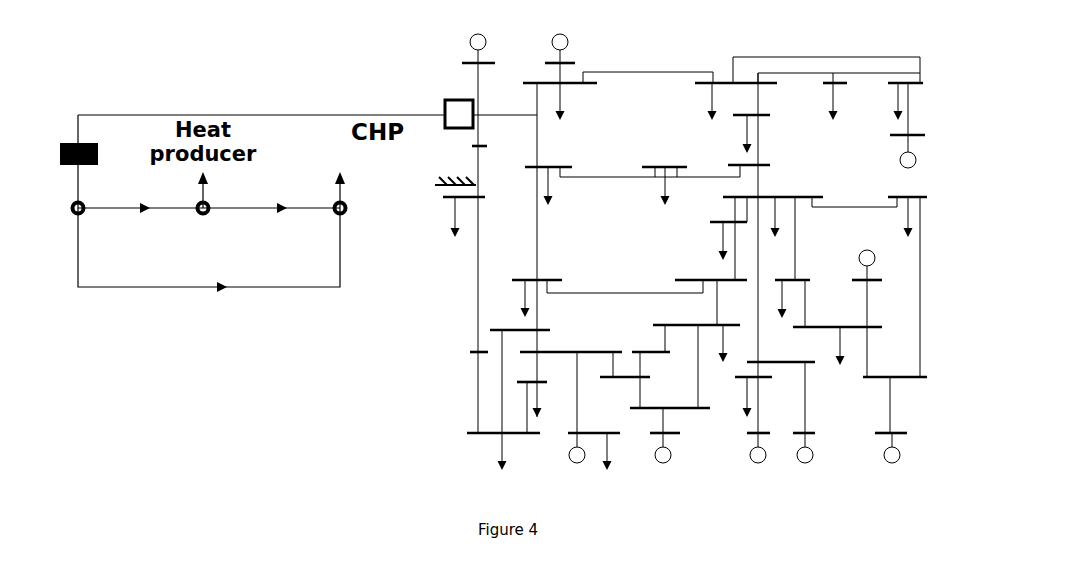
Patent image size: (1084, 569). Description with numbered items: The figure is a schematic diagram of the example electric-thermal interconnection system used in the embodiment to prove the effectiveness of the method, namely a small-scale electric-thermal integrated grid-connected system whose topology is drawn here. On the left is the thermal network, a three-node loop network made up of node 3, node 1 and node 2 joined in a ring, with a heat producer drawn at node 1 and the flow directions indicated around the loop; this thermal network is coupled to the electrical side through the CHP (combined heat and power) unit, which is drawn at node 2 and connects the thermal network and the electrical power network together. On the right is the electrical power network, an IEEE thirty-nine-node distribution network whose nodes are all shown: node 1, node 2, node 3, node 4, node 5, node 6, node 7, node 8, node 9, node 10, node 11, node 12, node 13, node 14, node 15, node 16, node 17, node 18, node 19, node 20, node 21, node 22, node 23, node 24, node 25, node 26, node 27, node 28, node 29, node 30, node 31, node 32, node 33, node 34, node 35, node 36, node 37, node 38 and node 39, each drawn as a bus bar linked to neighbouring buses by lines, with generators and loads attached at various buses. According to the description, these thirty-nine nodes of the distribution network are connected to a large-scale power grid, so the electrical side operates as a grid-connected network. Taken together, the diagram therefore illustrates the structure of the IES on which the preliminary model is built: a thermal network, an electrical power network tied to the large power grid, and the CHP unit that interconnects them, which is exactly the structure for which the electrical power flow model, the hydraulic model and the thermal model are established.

The node 1 is at (343, 185).
The node 2 is at (399, 164).
The node 3 is at (330, 192).
The node 4 is at (552, 281).
The node 5 is at (526, 331).
The node 6 is at (571, 344).
The node 7 is at (538, 383).
The node 8 is at (498, 425).
The node 9 is at (473, 343).
The node 10 is at (678, 409).
The node 11 is at (635, 378).
The node 12 is at (661, 353).
The node 13 is at (684, 326).
The node 14 is at (700, 281).
The node 15 is at (718, 223).
The node 16 is at (782, 198).
The node 17 is at (759, 163).
The node 18 is at (675, 163).
The node 19 is at (781, 353).
The node 20 is at (762, 378).
The node 21 is at (897, 198).
The node 22 is at (884, 378).
The node 23 is at (847, 328).
The node 24 is at (802, 281).
The node 25 is at (569, 84).
The node 26 is at (723, 84).
The node 27 is at (761, 116).
The node 28 is at (822, 84).
The node 29 is at (895, 84).
The node 30 is at (488, 52).
The node 31 is at (603, 445).
The node 32 is at (675, 445).
The node 33 is at (814, 445).
The node 34 is at (767, 445).
The node 35 is at (900, 445).
The node 36 is at (876, 269).
The node 37 is at (569, 48).
The node 38 is at (896, 148).
The node 39 is at (473, 198).